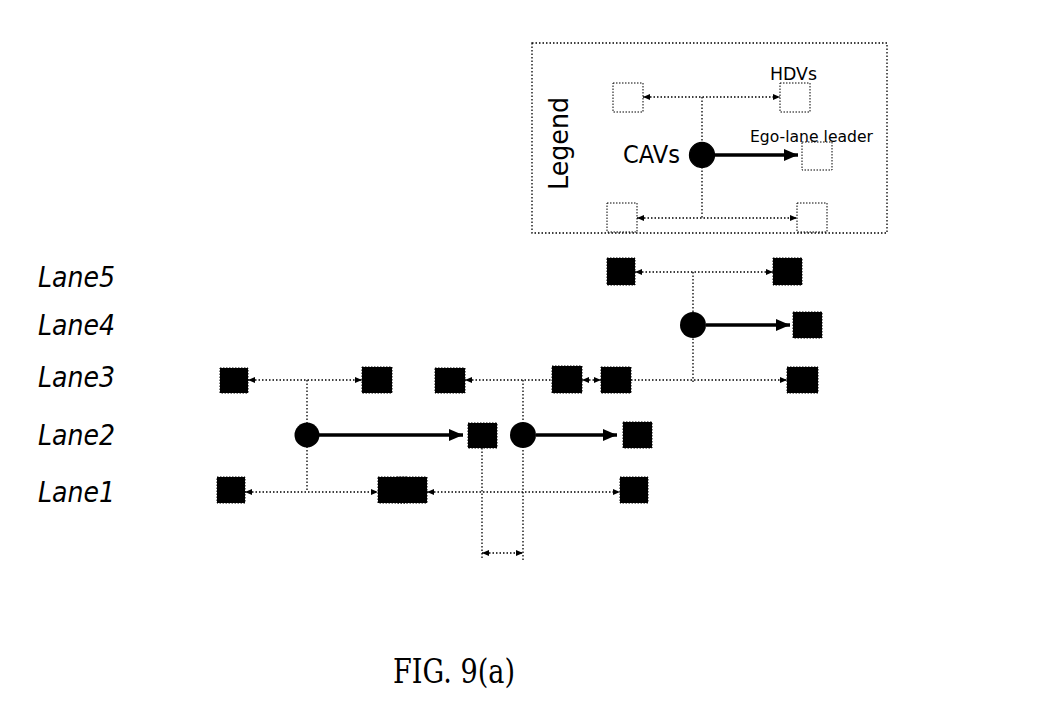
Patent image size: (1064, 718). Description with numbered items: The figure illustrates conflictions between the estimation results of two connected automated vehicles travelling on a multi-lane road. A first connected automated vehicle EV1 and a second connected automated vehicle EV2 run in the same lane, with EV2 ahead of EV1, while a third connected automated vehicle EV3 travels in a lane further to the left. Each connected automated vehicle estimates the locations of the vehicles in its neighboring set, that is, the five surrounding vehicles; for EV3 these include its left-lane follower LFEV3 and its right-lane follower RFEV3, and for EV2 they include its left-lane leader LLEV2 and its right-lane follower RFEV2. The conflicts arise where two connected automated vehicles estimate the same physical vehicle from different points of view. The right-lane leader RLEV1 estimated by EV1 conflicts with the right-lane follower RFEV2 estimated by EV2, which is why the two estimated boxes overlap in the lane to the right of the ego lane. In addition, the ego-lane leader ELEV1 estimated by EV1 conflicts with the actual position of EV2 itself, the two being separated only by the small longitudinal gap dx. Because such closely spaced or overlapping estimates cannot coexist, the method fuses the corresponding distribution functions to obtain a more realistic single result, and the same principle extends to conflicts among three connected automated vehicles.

The CAV EV1 is at (286, 437).
The CAV EV2 is at (542, 442).
The CAV EV3 is at (671, 325).
The left-lane follower of EV3 LFEV3 is at (606, 258).
The right-lane follower of EV3 RFEV3 is at (555, 368).
The left-lane leader of EV2 LLEV2 is at (646, 386).
The ego-lane leader of EV1 ELEV1 is at (472, 425).
The right-lane follower of EV2 RFEV2 is at (427, 481).
The right-lane leader of EV1 RLEV1 is at (374, 498).
The longitudinal gap between EL_EV1 and EV2 dx is at (493, 517).